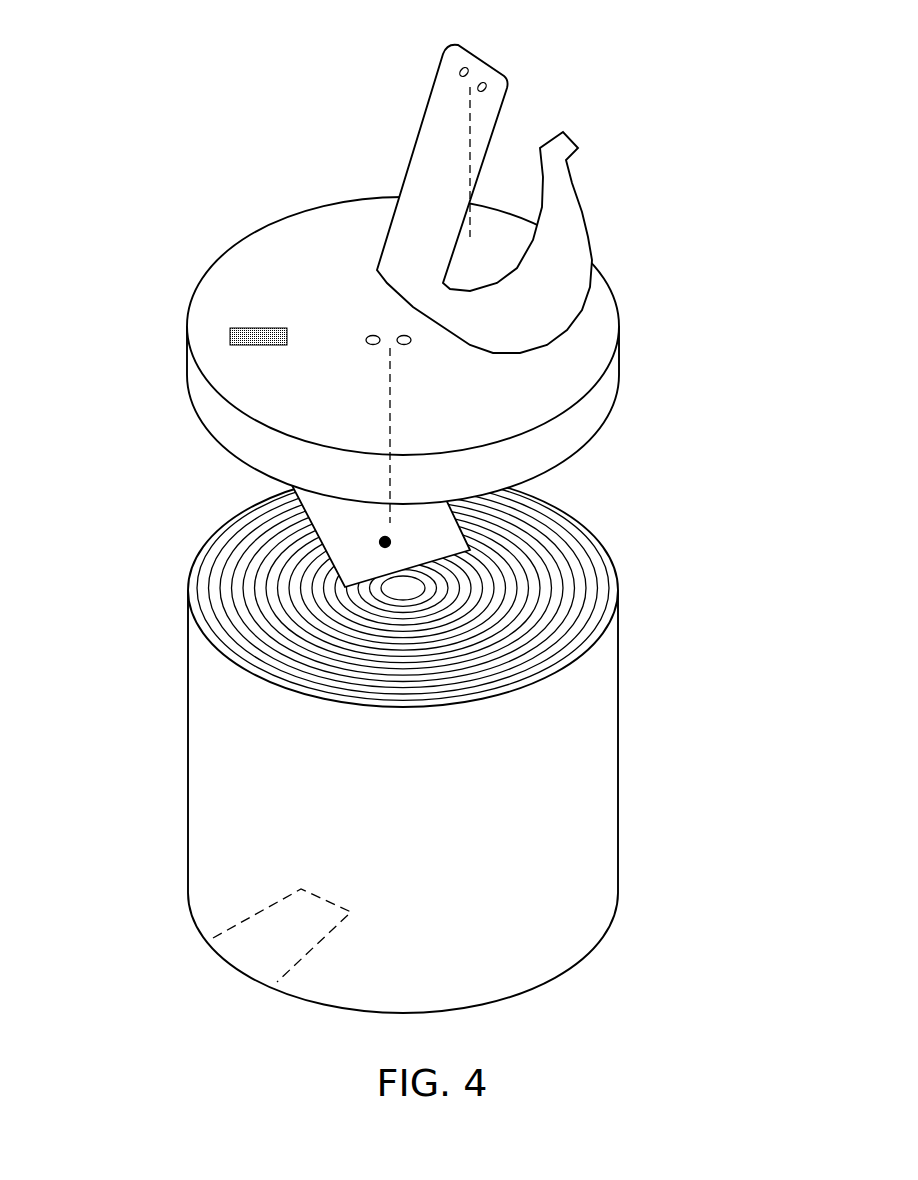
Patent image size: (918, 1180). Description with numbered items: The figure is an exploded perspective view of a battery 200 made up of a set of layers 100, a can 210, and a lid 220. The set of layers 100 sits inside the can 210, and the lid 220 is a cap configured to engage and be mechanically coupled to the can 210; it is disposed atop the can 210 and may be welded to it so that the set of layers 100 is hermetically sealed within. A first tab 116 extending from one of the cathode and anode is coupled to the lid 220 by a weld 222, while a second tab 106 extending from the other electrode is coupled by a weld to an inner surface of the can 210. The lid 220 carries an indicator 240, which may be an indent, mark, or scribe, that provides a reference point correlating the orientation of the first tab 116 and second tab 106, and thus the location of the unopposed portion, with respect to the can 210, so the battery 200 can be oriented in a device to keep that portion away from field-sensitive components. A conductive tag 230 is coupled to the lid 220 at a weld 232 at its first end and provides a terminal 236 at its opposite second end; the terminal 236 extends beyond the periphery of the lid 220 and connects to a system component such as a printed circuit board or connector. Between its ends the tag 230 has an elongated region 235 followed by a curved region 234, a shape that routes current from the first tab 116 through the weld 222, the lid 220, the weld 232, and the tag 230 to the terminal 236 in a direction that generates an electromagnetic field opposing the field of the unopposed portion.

The set of layers 100 is at (575, 527).
The second tab 106 is at (272, 942).
The first tab 116 is at (382, 543).
The battery 200 is at (166, 91).
The can 210 is at (206, 740).
The lid 220 is at (587, 413).
The weld 222 is at (373, 333).
The tag 230 is at (582, 210).
The weld 232 is at (487, 82).
The curved region 234 is at (580, 317).
The elongated region 235 is at (437, 172).
The terminal 236 is at (560, 148).
The indicator 240 is at (230, 340).